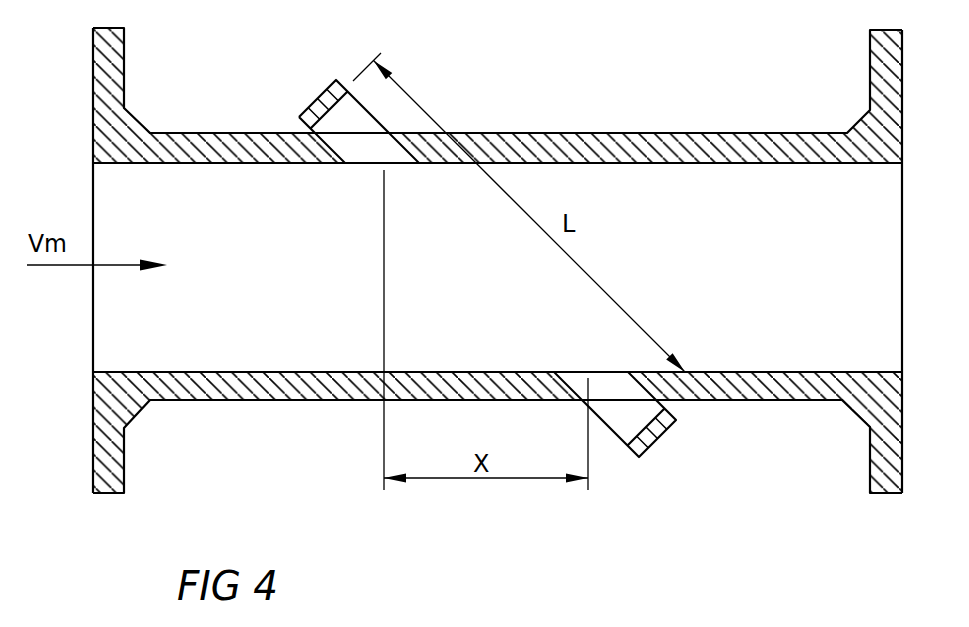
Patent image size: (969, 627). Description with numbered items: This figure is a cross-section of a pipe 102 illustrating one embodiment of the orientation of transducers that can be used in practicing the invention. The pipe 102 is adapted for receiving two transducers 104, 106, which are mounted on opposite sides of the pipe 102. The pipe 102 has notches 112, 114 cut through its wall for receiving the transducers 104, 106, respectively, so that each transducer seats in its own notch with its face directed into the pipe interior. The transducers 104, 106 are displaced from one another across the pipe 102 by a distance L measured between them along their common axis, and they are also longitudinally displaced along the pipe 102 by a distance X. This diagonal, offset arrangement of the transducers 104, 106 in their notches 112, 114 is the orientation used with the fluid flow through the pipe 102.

The pipe 102 is at (738, 133).
The transducer 104 is at (315, 101).
The transducer 106 is at (658, 438).
The notch 112 is at (368, 153).
The notch 114 is at (614, 390).